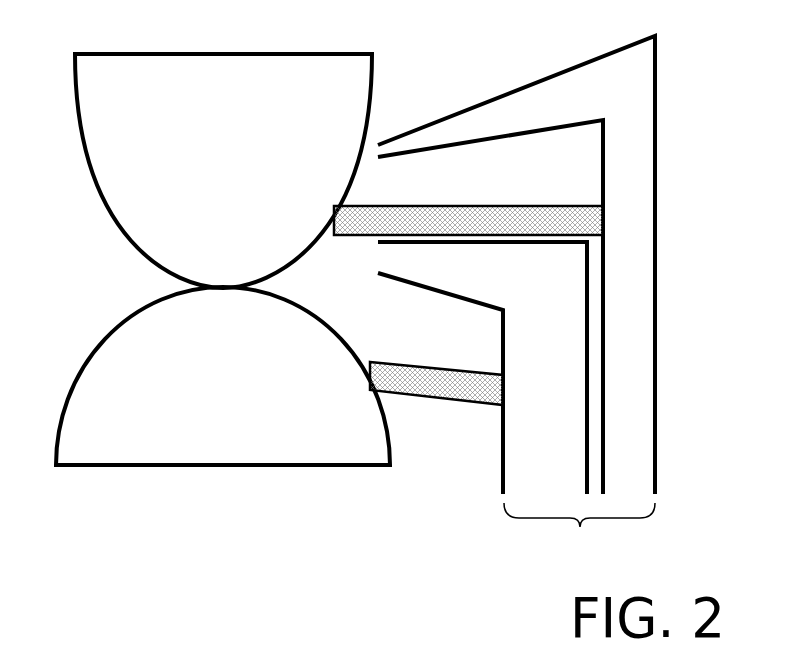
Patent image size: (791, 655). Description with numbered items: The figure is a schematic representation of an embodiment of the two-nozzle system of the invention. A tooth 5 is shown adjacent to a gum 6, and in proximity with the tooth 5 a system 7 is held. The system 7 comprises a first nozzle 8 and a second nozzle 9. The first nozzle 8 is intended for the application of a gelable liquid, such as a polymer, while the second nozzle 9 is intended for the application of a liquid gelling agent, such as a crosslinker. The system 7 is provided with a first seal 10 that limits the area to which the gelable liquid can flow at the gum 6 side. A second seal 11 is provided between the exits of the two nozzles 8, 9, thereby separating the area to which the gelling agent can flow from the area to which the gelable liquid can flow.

The tooth 5 is at (215, 154).
The gum 6 is at (215, 398).
The system 7 is at (579, 532).
The first nozzle 8 is at (418, 263).
The second nozzle 9 is at (418, 142).
The first seal 10 is at (452, 383).
The second seal 11 is at (450, 220).